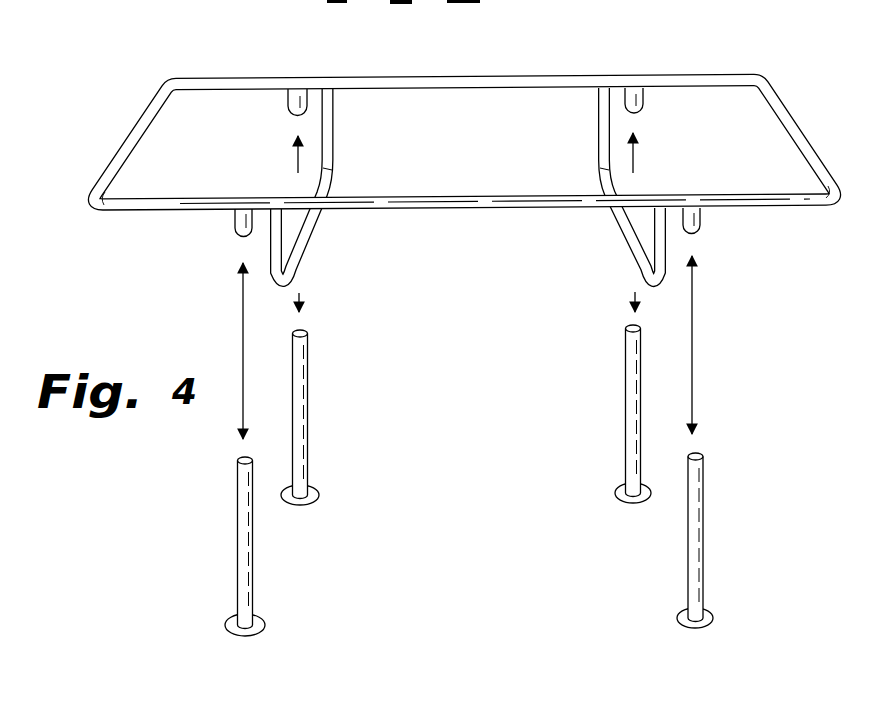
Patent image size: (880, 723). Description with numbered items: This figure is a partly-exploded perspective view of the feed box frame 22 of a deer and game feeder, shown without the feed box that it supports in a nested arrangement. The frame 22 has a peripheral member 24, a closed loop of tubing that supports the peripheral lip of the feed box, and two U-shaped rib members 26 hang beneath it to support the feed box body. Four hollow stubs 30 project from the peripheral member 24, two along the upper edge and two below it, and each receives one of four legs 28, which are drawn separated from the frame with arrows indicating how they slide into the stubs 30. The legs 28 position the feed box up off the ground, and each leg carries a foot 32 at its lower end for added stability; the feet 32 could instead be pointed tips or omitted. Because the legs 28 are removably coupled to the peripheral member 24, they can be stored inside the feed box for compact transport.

The feed box frame 22 is at (650, 38).
The peripheral member 24 is at (463, 77).
The U-shaped rib members 26 is at (337, 140).
The legs 28 is at (240, 535).
The hollow stubs 30 is at (237, 222).
The feet 32 is at (712, 614).